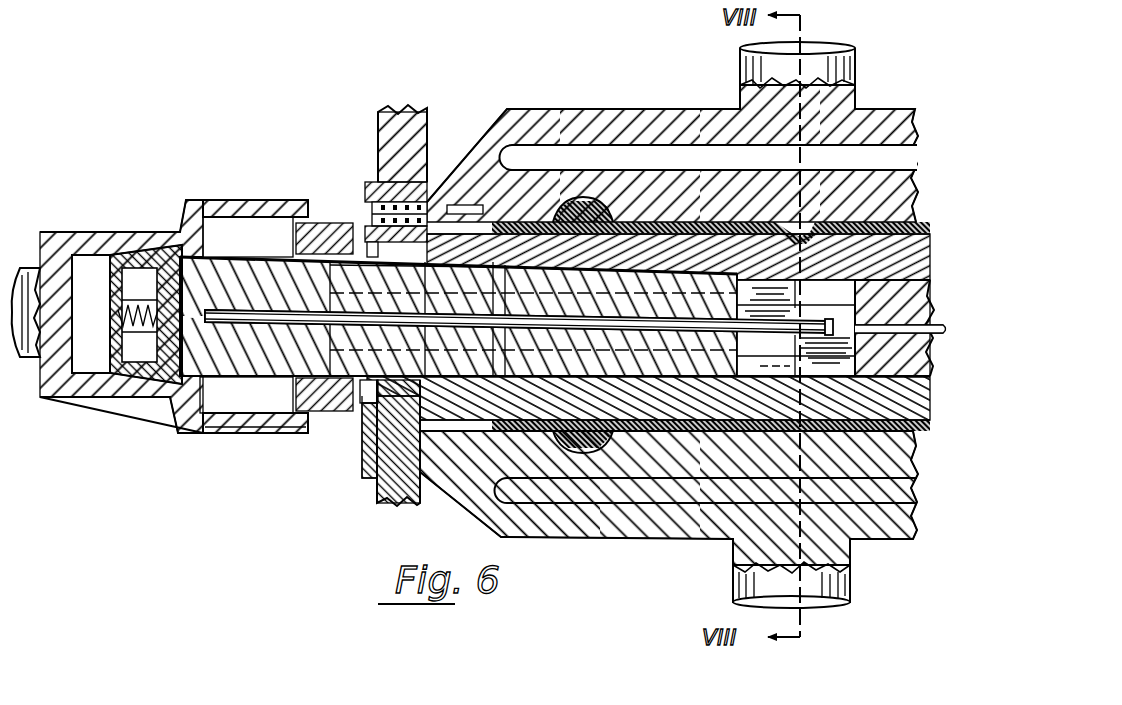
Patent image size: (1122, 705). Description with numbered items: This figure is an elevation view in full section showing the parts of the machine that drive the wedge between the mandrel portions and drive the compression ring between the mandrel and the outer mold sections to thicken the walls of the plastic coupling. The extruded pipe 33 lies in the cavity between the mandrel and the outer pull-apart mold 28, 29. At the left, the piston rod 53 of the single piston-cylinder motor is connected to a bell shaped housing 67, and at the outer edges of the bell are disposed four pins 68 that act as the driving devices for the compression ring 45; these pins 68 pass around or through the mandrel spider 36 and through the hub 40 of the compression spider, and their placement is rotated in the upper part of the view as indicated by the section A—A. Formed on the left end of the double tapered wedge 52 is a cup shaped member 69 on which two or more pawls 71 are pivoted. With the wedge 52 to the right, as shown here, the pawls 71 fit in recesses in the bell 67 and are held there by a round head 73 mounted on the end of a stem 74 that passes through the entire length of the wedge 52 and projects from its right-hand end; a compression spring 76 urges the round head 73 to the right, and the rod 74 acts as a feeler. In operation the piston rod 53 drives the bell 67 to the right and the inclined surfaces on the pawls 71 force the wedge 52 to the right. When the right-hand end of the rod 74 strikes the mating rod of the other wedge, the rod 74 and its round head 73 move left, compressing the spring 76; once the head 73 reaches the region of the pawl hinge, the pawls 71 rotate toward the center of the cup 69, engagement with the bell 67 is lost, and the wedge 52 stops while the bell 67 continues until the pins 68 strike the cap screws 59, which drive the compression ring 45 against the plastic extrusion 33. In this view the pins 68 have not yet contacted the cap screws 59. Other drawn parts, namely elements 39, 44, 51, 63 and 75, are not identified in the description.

The outer pull-apart mold section 28 is at (630, 542).
The outer pull-apart mold section 29 is at (640, 103).
The pipe 33 is at (926, 226).
The mandrel spider 36 is at (351, 423).
The mounting plate 39 is at (410, 108).
The hub 40 is at (363, 462).
The lower plate portion 44 is at (418, 498).
The compression ring 45 is at (470, 204).
The bearing segment 51 is at (796, 328).
The double tapered wedge 52 is at (250, 226).
The piston rod 53 is at (25, 268).
The cap screw 59 is at (370, 208).
The coolant passage 63 is at (705, 324).
The bell shaped housing 67 is at (98, 232).
The driving pin 68 is at (290, 200).
The cup shaped member 69 is at (108, 278).
The pawl 71 is at (140, 255).
The round head 73 is at (139, 304).
The stem 74 is at (220, 326).
The spacer 75 is at (353, 412).
The compression spring 76 is at (138, 326).